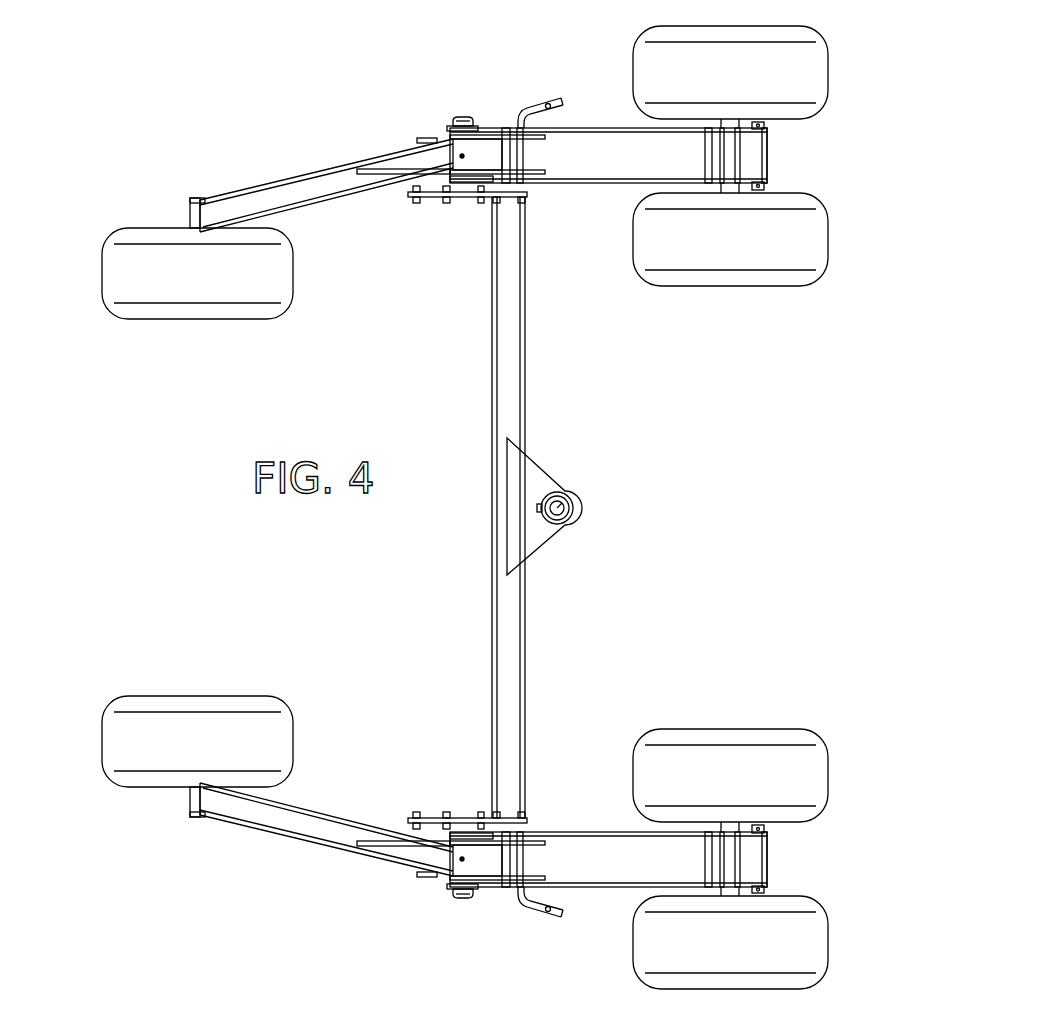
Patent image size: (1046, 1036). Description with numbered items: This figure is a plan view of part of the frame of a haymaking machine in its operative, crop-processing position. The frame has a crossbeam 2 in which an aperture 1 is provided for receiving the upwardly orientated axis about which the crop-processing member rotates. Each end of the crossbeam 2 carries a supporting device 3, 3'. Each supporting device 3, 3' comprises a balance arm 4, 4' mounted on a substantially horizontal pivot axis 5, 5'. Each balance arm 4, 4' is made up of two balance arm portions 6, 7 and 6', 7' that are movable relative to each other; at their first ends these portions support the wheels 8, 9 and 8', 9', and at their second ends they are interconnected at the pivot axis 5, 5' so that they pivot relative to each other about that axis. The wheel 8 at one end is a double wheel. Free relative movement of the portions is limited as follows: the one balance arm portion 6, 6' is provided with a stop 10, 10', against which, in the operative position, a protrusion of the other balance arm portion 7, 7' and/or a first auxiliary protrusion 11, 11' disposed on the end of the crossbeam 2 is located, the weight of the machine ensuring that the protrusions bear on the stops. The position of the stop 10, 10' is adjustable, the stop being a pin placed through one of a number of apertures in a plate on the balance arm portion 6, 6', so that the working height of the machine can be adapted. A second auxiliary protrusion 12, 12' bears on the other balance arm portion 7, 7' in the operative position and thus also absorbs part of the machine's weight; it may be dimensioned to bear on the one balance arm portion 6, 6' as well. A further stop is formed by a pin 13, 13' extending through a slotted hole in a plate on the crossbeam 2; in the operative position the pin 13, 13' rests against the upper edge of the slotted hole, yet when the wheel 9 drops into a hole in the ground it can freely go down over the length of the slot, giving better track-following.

The aperture 1 is at (570, 486).
The crossbeam 2 is at (508, 634).
The supporting device 3 is at (752, 783).
The supporting device 3' is at (755, 236).
The balance arm 4 is at (429, 905).
The balance arm 4' is at (441, 113).
The pivot axis 5 is at (476, 940).
The pivot axis 5' is at (480, 90).
The one balance arm portion 6 is at (608, 895).
The one balance arm portion 6' is at (608, 200).
The other balance arm portion 7 is at (321, 804).
The other balance arm portion 7' is at (321, 173).
The wheel 8 is at (766, 769).
The wheel 8' is at (770, 236).
The wheel 9 is at (197, 714).
The wheel 9' is at (170, 245).
The stop 10 is at (555, 937).
The stop 10' is at (559, 82).
The first auxiliary protrusion 11 is at (560, 859).
The first auxiliary protrusion 11' is at (563, 155).
The second auxiliary protrusion 12 is at (398, 766).
The second auxiliary protrusion 12' is at (393, 250).
The pin 13 is at (461, 734).
The pin 13' is at (454, 284).